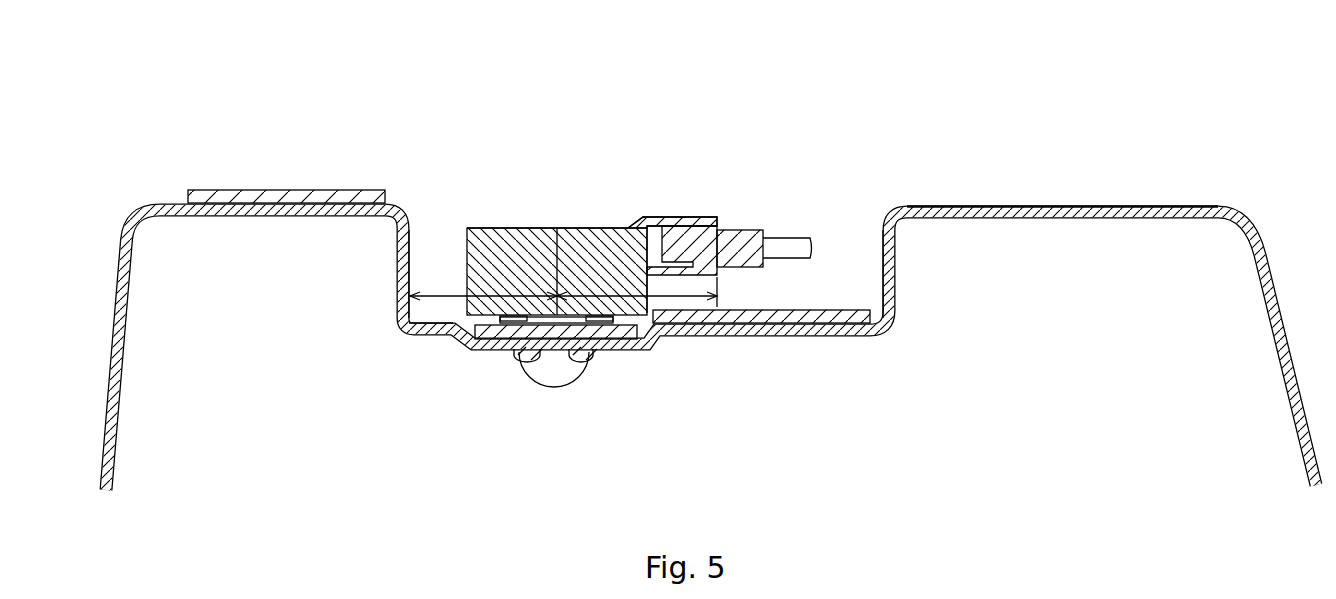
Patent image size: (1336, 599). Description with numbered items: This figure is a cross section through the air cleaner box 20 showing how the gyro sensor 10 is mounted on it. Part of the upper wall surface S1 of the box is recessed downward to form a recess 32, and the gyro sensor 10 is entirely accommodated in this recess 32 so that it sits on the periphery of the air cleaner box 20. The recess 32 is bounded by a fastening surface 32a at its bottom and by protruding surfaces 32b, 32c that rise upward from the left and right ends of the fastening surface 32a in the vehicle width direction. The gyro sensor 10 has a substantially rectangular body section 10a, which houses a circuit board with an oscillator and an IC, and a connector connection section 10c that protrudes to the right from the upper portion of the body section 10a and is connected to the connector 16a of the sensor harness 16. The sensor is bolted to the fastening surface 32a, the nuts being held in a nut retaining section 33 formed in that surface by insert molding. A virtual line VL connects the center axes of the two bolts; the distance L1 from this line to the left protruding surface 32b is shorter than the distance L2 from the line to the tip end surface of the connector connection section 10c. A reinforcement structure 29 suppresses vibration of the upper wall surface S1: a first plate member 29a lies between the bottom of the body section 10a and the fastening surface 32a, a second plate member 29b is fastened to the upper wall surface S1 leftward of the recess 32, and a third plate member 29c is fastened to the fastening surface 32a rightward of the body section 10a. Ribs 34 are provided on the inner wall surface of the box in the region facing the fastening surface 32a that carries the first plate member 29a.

The gyro sensor 10 is at (592, 194).
The body section 10a is at (597, 228).
The connector connection section 10c is at (700, 217).
The sensor harness 16 is at (765, 166).
The connector 16a is at (745, 230).
The air cleaner box 20 is at (1062, 125).
The reinforcement structure 29 is at (535, 273).
The first plate member 29a is at (491, 331).
The second plate member 29b is at (310, 190).
The third plate member 29c is at (841, 309).
The recess 32 is at (411, 231).
The fastening surface 32a is at (437, 324).
The protruding surface 32b is at (408, 276).
The protruding surface 32c is at (880, 291).
The nut retaining section 33 is at (590, 372).
The ribs 34 is at (578, 363).
The upper wall surface S1 is at (1025, 206).
The virtual line VL is at (557, 293).
The distance L1 is at (440, 293).
The distance L2 is at (692, 293).